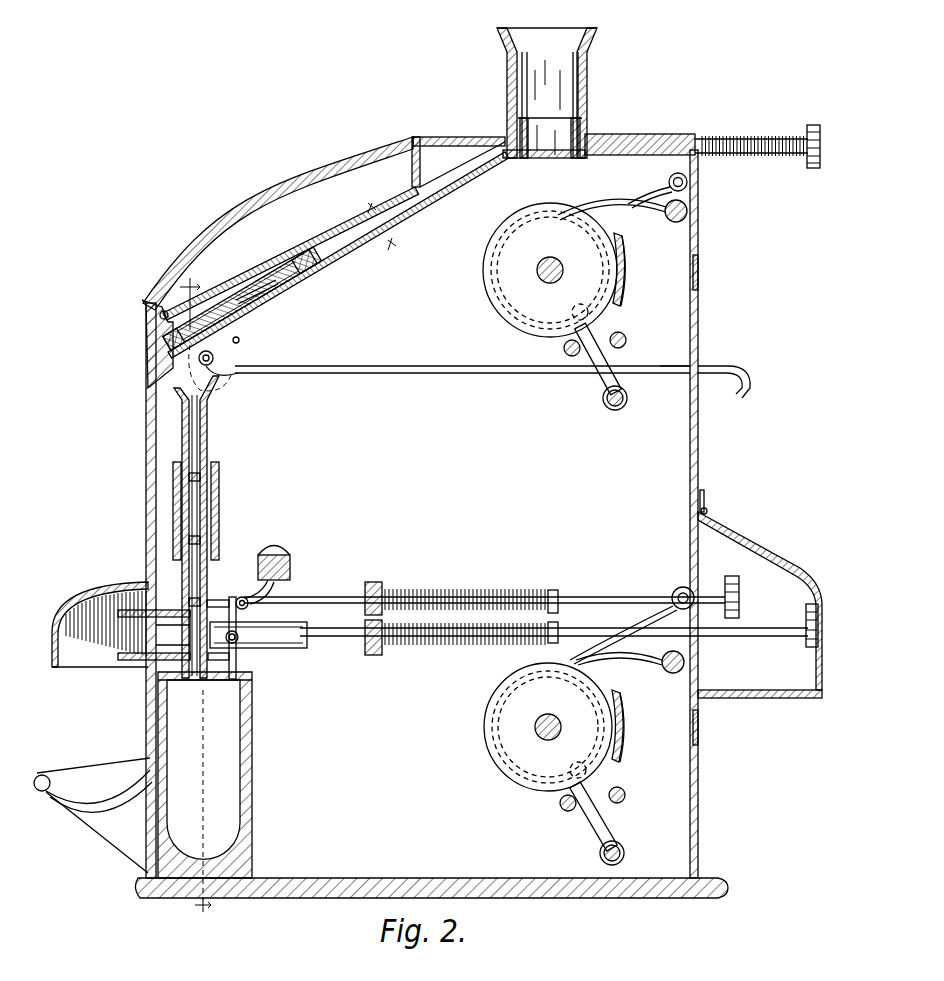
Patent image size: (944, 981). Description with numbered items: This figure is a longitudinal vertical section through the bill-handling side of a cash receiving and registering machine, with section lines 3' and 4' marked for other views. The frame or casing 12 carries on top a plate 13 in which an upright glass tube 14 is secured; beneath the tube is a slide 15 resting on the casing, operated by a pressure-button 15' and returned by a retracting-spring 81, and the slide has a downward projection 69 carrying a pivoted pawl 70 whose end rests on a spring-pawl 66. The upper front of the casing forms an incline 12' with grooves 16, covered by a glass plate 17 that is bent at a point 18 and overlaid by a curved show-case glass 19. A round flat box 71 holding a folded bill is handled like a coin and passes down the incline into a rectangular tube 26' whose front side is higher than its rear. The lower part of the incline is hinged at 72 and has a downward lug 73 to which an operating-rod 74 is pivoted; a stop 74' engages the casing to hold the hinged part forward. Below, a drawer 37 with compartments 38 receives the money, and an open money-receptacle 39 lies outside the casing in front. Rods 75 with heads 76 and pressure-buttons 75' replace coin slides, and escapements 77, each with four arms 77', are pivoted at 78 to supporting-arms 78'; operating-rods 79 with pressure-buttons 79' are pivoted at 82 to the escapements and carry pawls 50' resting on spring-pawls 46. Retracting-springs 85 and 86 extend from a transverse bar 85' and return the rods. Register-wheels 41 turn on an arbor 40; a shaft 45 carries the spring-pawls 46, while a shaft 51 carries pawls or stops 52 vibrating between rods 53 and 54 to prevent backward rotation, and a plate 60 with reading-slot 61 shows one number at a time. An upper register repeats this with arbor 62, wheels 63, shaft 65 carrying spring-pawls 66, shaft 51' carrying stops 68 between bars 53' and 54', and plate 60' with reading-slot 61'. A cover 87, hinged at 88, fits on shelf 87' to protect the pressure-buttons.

The frame or casing 12 is at (435, 524).
The forward slope or incline 12' is at (338, 255).
The plate 13 is at (499, 138).
The tubes 14 is at (593, 84).
The slide 15 is at (599, 154).
The pressure-button 15' is at (797, 139).
The grooves 16 is at (463, 170).
The glass plate 17 is at (343, 232).
The joint or bend point 18 is at (254, 291).
The curved or show-case glass 19 is at (268, 176).
The tubes 26' is at (212, 527).
The money till or drawer 37 is at (254, 830).
The money pits or compartments 38 is at (216, 795).
The open money-receptacle 39 is at (93, 815).
The transverse shaft or arbor 40 is at (562, 728).
The wheels 41 is at (548, 727).
The transverse shaft or rod 45 is at (672, 673).
The spring-pawls 46 is at (606, 662).
The pawls 50' is at (623, 635).
The transverse shaft or rod 51 is at (634, 853).
The transverse shaft 51' is at (593, 400).
The pivoted pawls or stops 52 is at (604, 830).
The transverse rod 53 is at (544, 805).
The transverse bar 53' is at (551, 351).
The transverse rod 54 is at (637, 794).
The transverse bar 54' is at (637, 338).
The plate 60 is at (629, 722).
The plate 60' is at (636, 267).
The reading-slot 61 is at (636, 727).
The reading-slot 61' is at (641, 271).
The arbor 62 is at (563, 271).
The wheels 63 is at (550, 270).
The transverse shaft 65 is at (688, 212).
The spring-pawls 66 is at (606, 202).
The pawls or stops 68 is at (612, 378).
The downward projection 69 is at (688, 178).
The pivoted pawl 70 is at (645, 195).
The round flat box 71 is at (582, 126).
The hinge 72 is at (242, 340).
The downward lug or projection 73 is at (220, 378).
The operating-rod 74 is at (462, 358).
The stop 74' is at (671, 381).
The rods 75 is at (554, 624).
The pressure-buttons 75' is at (794, 622).
The heads 76 is at (298, 650).
The escapements 77 is at (256, 642).
The arms 77' is at (228, 641).
The pivot 78 is at (254, 650).
The supporting-arms 78' is at (289, 588).
The operating-rods 79 is at (484, 598).
The pressure-buttons 79' is at (727, 593).
The retracting-spring 81 is at (760, 146).
The pivot 82 is at (248, 603).
The retracting-spring 85 is at (465, 641).
The transverse bar 85' is at (388, 631).
The retracting-spring 86 is at (474, 592).
The lid or cover 87 is at (760, 601).
The shelf 87' is at (760, 700).
The hinge 88 is at (710, 511).
The section line 3' 3' is at (195, 596).
The section line 4' 4' is at (382, 224).